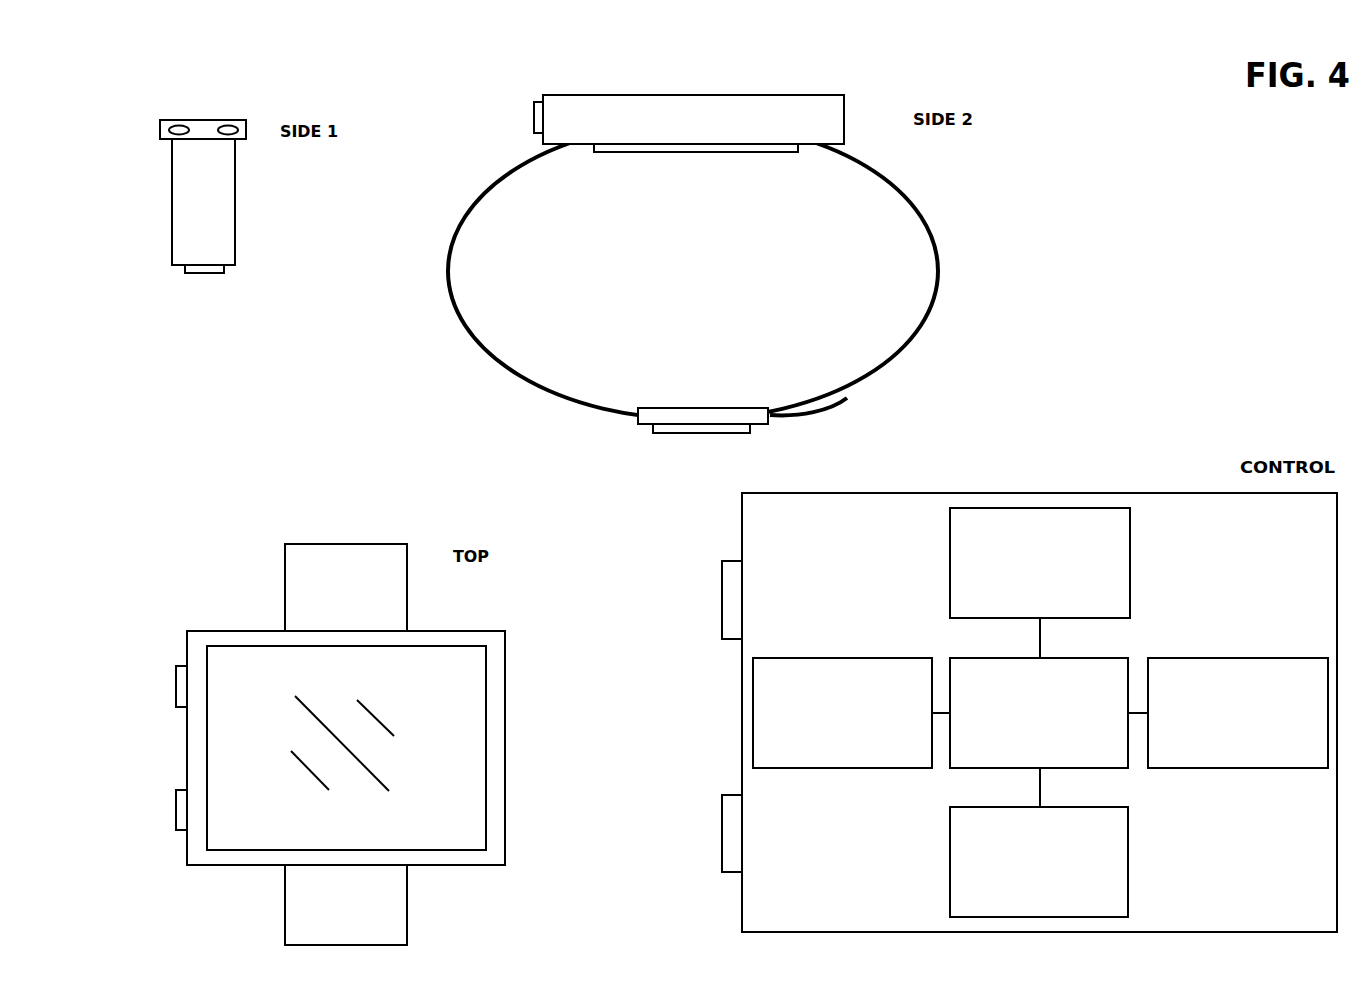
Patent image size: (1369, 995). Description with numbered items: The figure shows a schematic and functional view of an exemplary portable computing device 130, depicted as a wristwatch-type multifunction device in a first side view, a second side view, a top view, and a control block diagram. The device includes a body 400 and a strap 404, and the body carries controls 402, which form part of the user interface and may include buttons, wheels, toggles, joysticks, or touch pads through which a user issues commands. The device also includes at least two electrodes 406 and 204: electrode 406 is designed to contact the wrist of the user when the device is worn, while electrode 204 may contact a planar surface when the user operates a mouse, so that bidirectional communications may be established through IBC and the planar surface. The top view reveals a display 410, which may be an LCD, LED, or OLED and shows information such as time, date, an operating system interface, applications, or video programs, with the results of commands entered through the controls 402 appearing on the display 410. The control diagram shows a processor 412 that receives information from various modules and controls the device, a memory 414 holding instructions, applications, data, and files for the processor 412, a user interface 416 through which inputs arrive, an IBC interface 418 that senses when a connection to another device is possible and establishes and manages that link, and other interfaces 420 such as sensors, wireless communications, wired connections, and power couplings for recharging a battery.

The portable computing device 130 is at (183, 166).
The electrode 204 is at (703, 450).
The body 400 is at (762, 496).
The controls 402 is at (434, 466).
The strap 404 is at (586, 534).
The electrode 406 is at (696, 178).
The display 410 is at (391, 757).
The processor 412 is at (1063, 684).
The memory 414 is at (1063, 861).
The user interface 416 is at (1238, 684).
The IBC interface 418 is at (842, 684).
The other interfaces 420 is at (1063, 561).